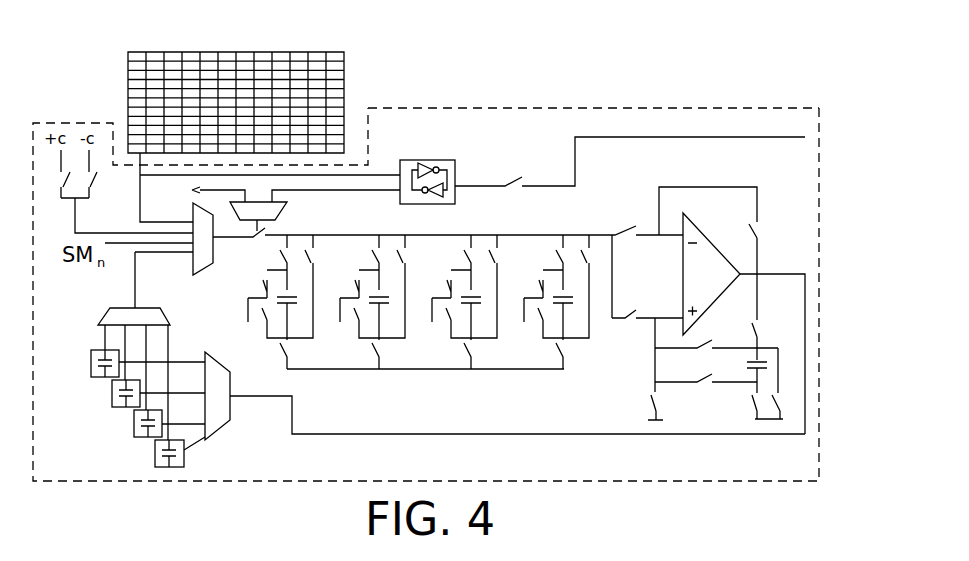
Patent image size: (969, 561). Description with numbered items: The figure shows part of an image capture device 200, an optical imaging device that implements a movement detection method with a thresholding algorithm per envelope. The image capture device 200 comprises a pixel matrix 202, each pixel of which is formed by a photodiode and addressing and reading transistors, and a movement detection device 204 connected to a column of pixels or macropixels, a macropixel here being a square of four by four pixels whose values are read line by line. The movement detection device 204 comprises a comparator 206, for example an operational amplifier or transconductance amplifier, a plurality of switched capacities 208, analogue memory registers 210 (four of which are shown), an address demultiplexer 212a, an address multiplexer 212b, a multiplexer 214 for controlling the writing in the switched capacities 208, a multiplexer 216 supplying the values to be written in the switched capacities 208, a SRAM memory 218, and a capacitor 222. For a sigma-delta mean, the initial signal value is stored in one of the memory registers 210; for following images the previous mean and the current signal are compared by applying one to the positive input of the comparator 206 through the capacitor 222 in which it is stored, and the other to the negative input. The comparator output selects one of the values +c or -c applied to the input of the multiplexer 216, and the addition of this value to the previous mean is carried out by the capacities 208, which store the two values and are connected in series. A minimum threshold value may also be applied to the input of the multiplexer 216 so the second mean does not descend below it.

The image capture device 200 is at (567, 101).
The pixel matrix 202 is at (345, 85).
The movement detection device 204 is at (716, 106).
The comparator 206 is at (702, 257).
The switched capacities 208 is at (430, 372).
The analogue memory registers 210 is at (114, 405).
The address demultiplexer 212a is at (215, 417).
The address multiplexer 212b is at (102, 322).
The multiplexer for controlling writing 214 is at (270, 212).
The multiplexer supplying values to be written 216 is at (203, 276).
The SRAM memory 218 is at (450, 173).
The capacitor 222 is at (762, 358).